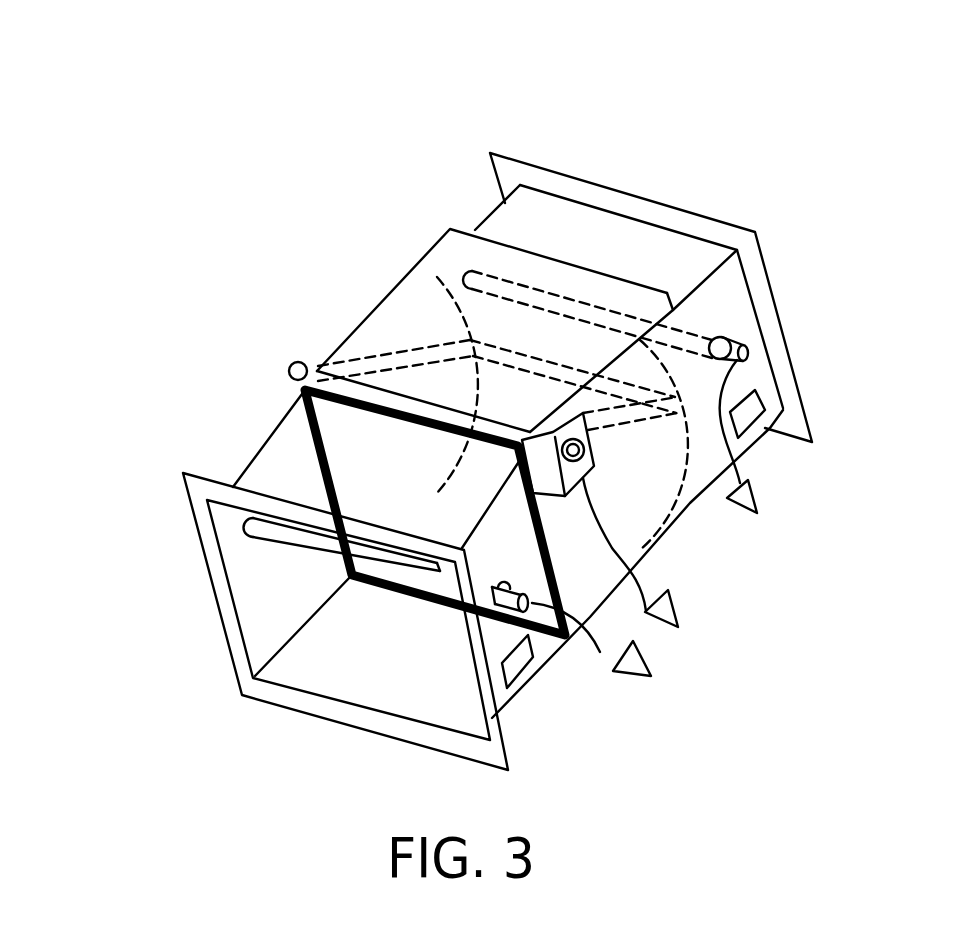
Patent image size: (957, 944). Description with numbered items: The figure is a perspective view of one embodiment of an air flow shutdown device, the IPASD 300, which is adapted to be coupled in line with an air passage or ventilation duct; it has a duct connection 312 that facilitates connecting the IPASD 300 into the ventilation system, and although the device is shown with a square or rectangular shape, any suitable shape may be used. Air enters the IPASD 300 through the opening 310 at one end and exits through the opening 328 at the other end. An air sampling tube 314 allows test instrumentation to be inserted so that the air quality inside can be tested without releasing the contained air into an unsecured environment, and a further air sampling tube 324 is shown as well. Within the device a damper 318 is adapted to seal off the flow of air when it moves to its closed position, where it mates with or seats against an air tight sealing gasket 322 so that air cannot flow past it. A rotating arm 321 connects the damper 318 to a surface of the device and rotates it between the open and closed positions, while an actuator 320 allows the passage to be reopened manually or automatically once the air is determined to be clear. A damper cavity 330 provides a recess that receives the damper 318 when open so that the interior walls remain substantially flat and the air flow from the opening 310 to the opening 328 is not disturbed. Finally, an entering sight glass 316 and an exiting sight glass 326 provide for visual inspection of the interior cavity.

The IPASD 300 is at (360, 162).
The opening 310 is at (667, 172).
The duct connection 312 is at (768, 270).
The air sampling tube 314 is at (747, 347).
The entering sight glass 316 is at (758, 397).
The damper 318 is at (594, 466).
The actuator 320 is at (643, 430).
The air tight sealing gasket 322 is at (557, 573).
The air sampling tube 324 is at (563, 637).
The exiting sight glass 326 is at (525, 670).
The opening 328 is at (362, 612).
The damper cavity 330 is at (400, 283).
The rotating arm 321 is at (293, 362).